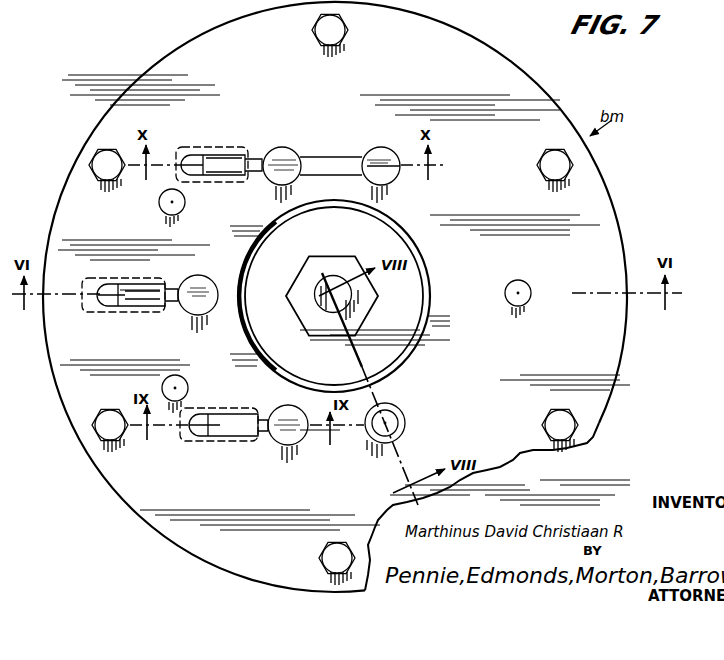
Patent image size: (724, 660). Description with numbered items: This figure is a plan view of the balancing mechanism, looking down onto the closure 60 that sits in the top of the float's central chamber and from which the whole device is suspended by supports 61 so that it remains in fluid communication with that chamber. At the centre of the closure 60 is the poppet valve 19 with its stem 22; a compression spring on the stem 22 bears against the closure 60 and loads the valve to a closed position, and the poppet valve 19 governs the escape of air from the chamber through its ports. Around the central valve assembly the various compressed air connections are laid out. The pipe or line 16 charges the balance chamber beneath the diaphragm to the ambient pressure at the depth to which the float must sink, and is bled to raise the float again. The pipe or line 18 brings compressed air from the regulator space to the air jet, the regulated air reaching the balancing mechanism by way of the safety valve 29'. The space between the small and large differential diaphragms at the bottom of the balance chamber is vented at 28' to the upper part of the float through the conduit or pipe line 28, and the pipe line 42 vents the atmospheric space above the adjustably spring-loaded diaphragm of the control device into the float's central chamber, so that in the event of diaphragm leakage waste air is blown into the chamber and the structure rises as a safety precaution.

The pipe or line 16 is at (140, 279).
The pipe or line 18 is at (197, 147).
The poppet valve 19 is at (410, 300).
The stem 22 is at (343, 280).
The conduit or pipe line 28 is at (396, 421).
The vent 28' is at (411, 423).
The safety valve 29' is at (286, 159).
The pipe line 42 is at (214, 409).
The closure 60 is at (608, 252).
The supports 61 is at (185, 202).